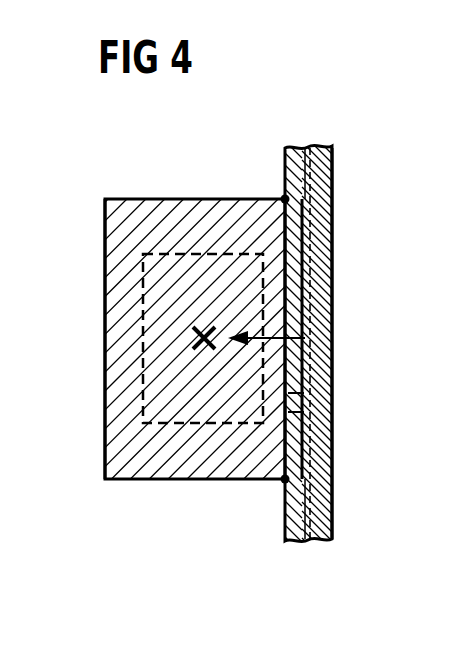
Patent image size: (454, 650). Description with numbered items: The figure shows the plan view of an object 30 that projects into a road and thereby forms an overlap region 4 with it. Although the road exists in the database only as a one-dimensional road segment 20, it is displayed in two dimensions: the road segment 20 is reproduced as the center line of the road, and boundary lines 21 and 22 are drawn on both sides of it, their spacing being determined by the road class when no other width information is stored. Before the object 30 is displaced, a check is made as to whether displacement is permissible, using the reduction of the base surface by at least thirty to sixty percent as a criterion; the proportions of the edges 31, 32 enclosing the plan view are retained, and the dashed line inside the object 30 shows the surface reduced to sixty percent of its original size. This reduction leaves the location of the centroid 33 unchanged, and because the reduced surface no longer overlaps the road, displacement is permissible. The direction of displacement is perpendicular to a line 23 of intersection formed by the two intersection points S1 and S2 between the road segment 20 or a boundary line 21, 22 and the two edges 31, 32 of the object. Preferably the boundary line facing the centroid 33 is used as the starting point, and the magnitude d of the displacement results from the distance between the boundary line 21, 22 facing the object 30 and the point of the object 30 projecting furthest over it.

The object 30 is at (221, 116).
The road segment 20 is at (318, 150).
The boundary line 21 is at (285, 533).
The boundary line 22 is at (332, 520).
The line of intersection 23 is at (333, 440).
The overlap region 4 is at (333, 362).
The magnitude d is at (333, 393).
The edge 31 is at (185, 197).
The edge 32 is at (105, 286).
The centroid 33 is at (200, 339).
The intersection point S1 is at (284, 198).
The intersection point S2 is at (284, 481).